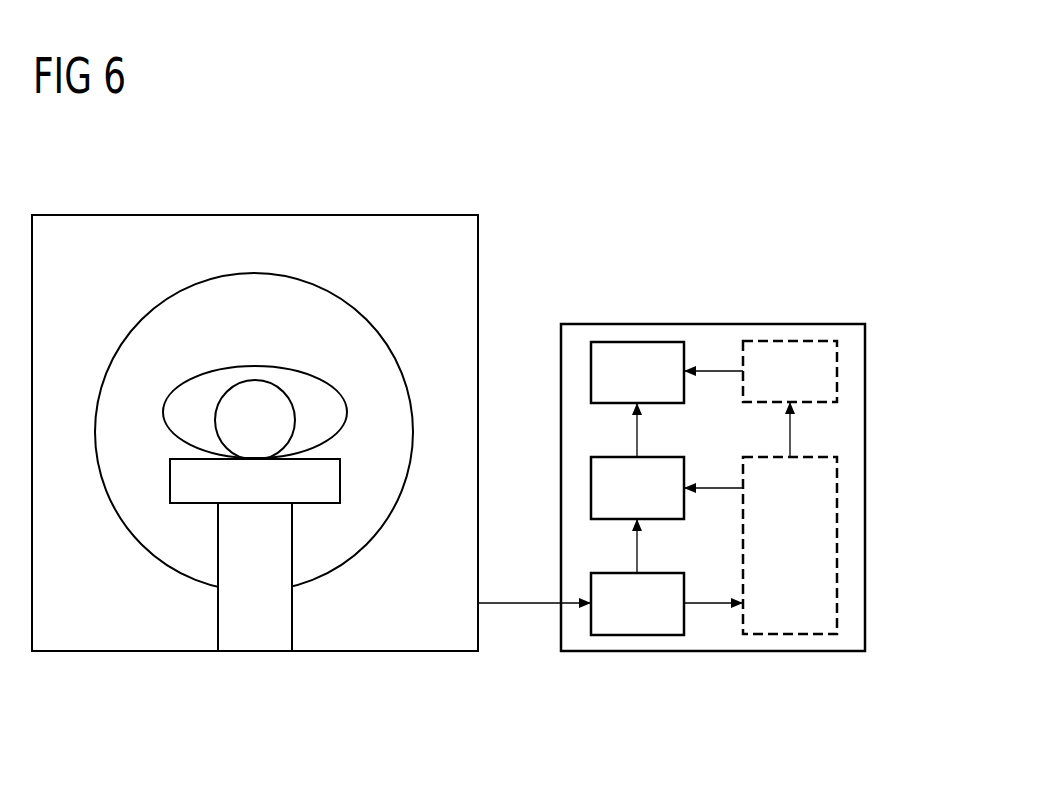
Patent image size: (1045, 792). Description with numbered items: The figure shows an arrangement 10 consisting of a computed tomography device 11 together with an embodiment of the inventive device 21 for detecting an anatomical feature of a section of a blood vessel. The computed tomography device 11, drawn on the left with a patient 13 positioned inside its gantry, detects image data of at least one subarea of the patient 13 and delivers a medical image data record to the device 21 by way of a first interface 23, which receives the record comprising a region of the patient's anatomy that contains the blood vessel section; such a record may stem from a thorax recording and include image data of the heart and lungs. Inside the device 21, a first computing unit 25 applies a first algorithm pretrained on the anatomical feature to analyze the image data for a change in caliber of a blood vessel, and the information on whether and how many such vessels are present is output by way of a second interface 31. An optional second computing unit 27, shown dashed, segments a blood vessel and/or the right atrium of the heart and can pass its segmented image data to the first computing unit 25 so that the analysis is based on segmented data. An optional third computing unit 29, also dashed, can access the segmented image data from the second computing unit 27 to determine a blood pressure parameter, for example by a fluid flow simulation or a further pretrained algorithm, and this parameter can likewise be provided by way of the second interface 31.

The arrangement 10 is at (600, 174).
The computed tomography device 11 is at (296, 433).
The patient 13 is at (222, 367).
The device for detecting an anatomical feature 21 is at (712, 487).
The first interface 23 is at (591, 583).
The first computing unit 25 is at (591, 488).
The second computing unit 27 is at (837, 565).
The third computing unit 29 is at (837, 362).
The second interface 31 is at (591, 372).